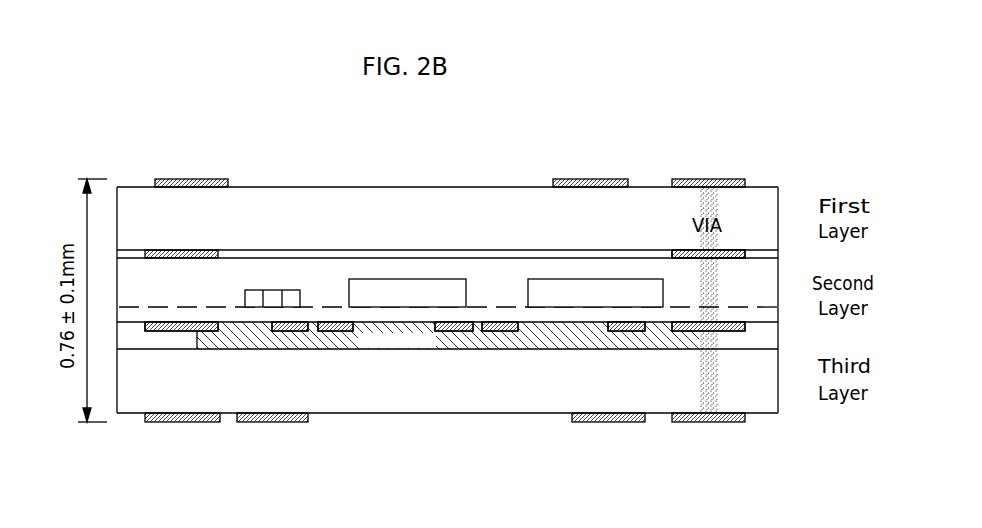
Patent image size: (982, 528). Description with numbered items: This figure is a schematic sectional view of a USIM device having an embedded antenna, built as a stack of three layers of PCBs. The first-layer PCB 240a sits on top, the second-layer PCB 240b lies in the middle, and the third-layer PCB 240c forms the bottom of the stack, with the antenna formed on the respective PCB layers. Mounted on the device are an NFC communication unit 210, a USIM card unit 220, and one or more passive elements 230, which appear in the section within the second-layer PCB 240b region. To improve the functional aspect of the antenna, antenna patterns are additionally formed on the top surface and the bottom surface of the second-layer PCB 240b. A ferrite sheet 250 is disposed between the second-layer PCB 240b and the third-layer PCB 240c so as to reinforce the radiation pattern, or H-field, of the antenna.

The first-layer PCB 240a is at (427, 193).
The second-layer PCB 240b is at (755, 281).
The third-layer PCB 240c is at (440, 414).
The NFC communication unit 210 is at (441, 278).
The USIM card unit 220 is at (555, 278).
The passive elements 230 is at (275, 297).
The ferrite sheet 250 is at (568, 350).